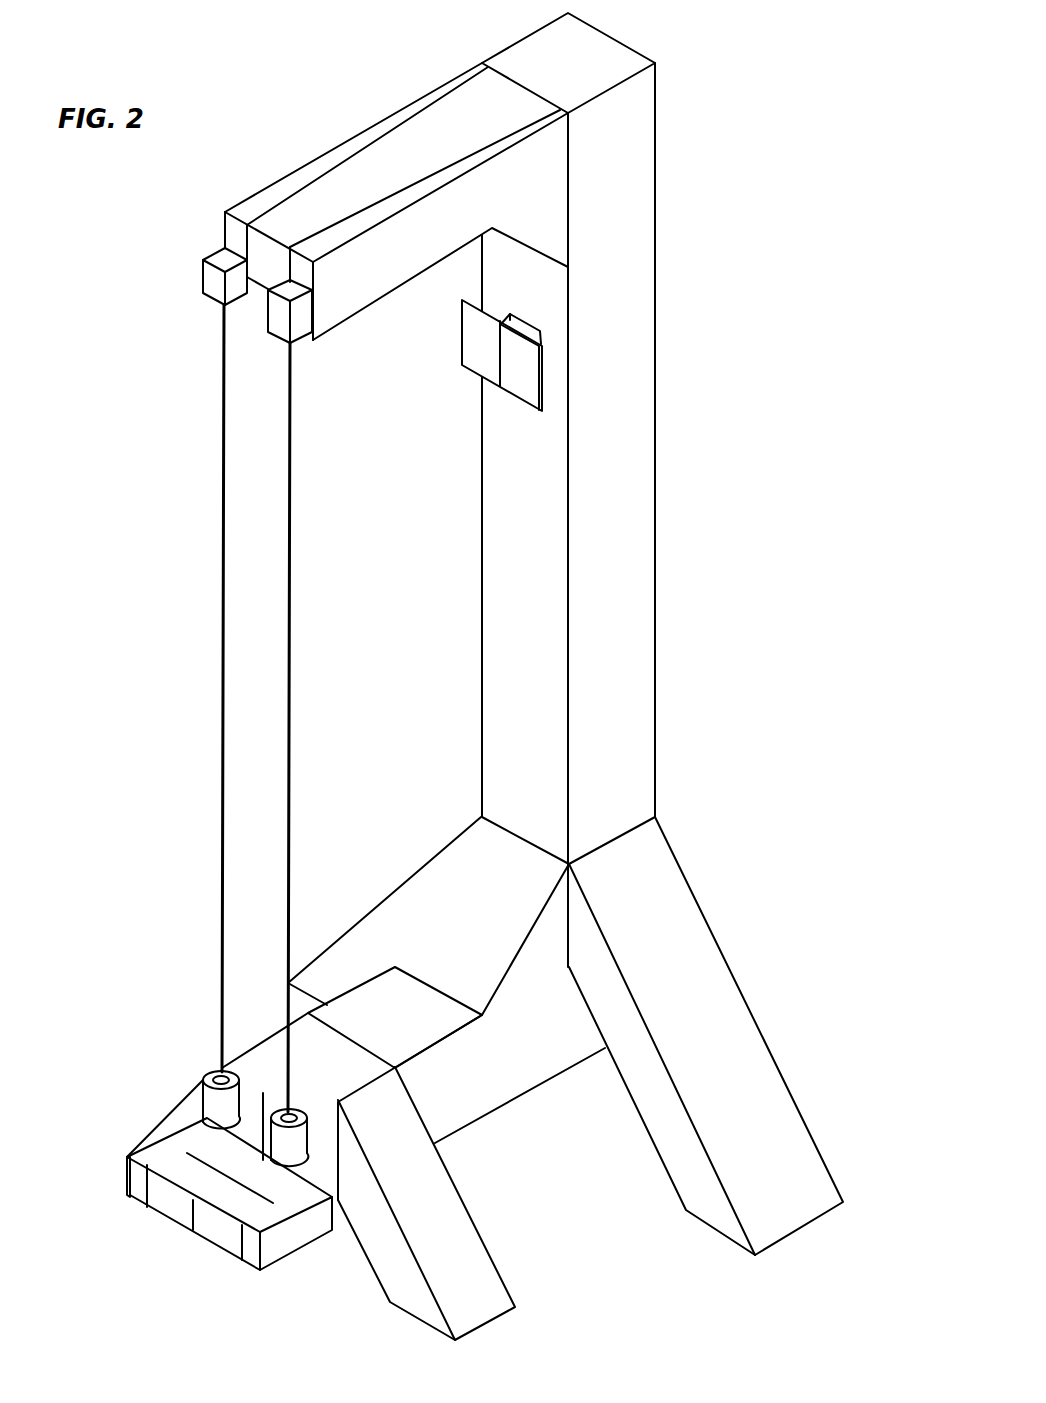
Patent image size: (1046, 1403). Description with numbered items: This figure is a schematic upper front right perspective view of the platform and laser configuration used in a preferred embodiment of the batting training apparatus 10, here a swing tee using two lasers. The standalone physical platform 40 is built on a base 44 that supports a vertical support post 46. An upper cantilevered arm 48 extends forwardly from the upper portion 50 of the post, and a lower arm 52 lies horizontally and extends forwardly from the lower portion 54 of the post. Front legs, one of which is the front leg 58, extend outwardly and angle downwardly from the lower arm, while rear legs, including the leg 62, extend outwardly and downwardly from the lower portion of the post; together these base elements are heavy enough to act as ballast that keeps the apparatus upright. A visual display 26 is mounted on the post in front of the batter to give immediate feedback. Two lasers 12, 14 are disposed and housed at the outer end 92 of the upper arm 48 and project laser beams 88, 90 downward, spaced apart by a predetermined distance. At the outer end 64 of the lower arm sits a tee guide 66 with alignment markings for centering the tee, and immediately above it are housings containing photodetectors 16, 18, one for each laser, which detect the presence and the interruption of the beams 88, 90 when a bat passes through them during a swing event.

The batting training apparatus 10 is at (686, 36).
The laser 12 is at (202, 272).
The laser 14 is at (296, 328).
The photodetector 16 is at (212, 1110).
The photodetector 18 is at (290, 1139).
The visual display 26 is at (529, 356).
The physical platform 40 is at (660, 585).
The base 44 is at (656, 814).
The vertical support post 46 is at (648, 374).
The upper cantilevered arm 48 is at (478, 93).
The upper portion of the vertical post 50 is at (646, 150).
The lower arm 52 is at (488, 1082).
The lower portion of the vertical support post 54 is at (644, 686).
The front leg 58 is at (466, 1244).
The right leg 62 is at (798, 1142).
The outer end of the lower arm 64 is at (300, 1094).
The tee guide 66 is at (222, 1246).
The laser beam 88 is at (218, 636).
The laser beam 90 is at (294, 588).
The outer end of upper arm 92 is at (336, 292).